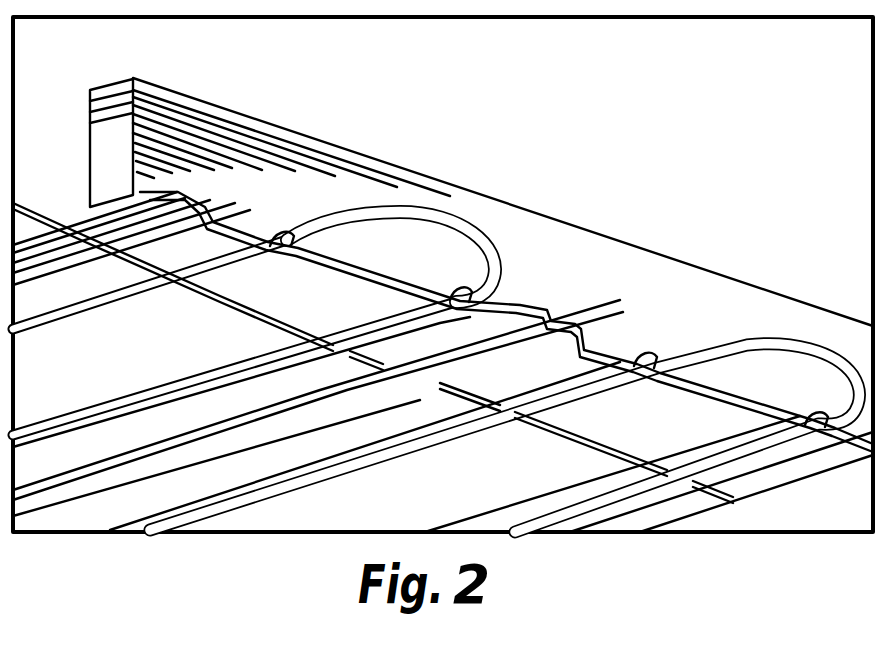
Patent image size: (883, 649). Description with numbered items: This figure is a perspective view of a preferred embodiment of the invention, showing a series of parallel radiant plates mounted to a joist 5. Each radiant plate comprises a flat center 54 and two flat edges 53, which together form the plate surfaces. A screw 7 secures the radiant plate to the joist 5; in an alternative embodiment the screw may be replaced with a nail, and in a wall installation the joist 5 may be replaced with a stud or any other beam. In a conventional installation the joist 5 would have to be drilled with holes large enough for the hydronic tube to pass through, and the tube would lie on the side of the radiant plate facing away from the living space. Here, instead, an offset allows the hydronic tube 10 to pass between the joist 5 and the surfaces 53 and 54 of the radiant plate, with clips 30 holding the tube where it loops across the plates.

The joist 5 is at (305, 132).
The screw 7 is at (137, 213).
The hydronic tube 10 is at (422, 213).
The pipe clip 30 is at (306, 229).
The flat edge 53 is at (103, 277).
The flat center 54 is at (155, 361).